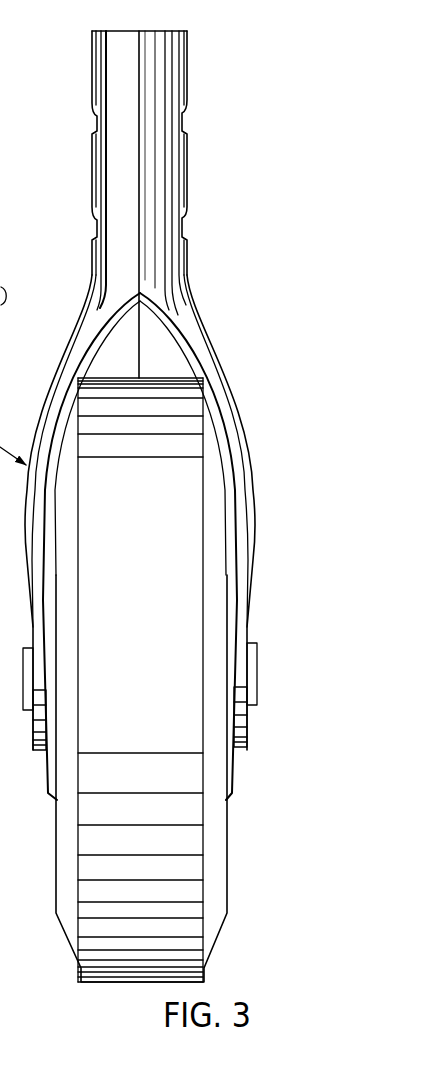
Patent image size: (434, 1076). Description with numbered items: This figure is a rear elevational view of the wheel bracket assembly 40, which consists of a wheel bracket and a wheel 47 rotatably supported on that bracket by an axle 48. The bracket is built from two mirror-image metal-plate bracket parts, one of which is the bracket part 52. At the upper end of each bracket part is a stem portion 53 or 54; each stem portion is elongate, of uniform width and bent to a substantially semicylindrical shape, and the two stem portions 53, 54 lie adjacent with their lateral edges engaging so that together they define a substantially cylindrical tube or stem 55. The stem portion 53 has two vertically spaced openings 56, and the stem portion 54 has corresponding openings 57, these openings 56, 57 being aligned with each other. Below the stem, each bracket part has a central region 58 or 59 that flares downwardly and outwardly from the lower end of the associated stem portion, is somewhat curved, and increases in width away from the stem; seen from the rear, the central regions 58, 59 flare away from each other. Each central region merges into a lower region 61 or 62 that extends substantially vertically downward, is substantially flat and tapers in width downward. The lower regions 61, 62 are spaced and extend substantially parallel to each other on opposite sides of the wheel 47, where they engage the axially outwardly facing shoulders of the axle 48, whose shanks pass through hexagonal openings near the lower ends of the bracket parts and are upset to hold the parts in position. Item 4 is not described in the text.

The outer housing section 4 is at (259, 483).
The wheel bracket assembly 40 is at (160, 512).
The wheel 47 is at (232, 882).
The axle 48 is at (260, 675).
The wheel bracket part 52 is at (239, 512).
The stem portion 53 is at (117, 173).
The stem portion 54 is at (165, 173).
The stem 55 is at (148, 195).
The openings 56 is at (95, 112).
The openings 57 is at (184, 110).
The central region 58 is at (53, 402).
The central region 59 is at (232, 412).
The lower region 61 is at (37, 628).
The lower region 62 is at (237, 623).